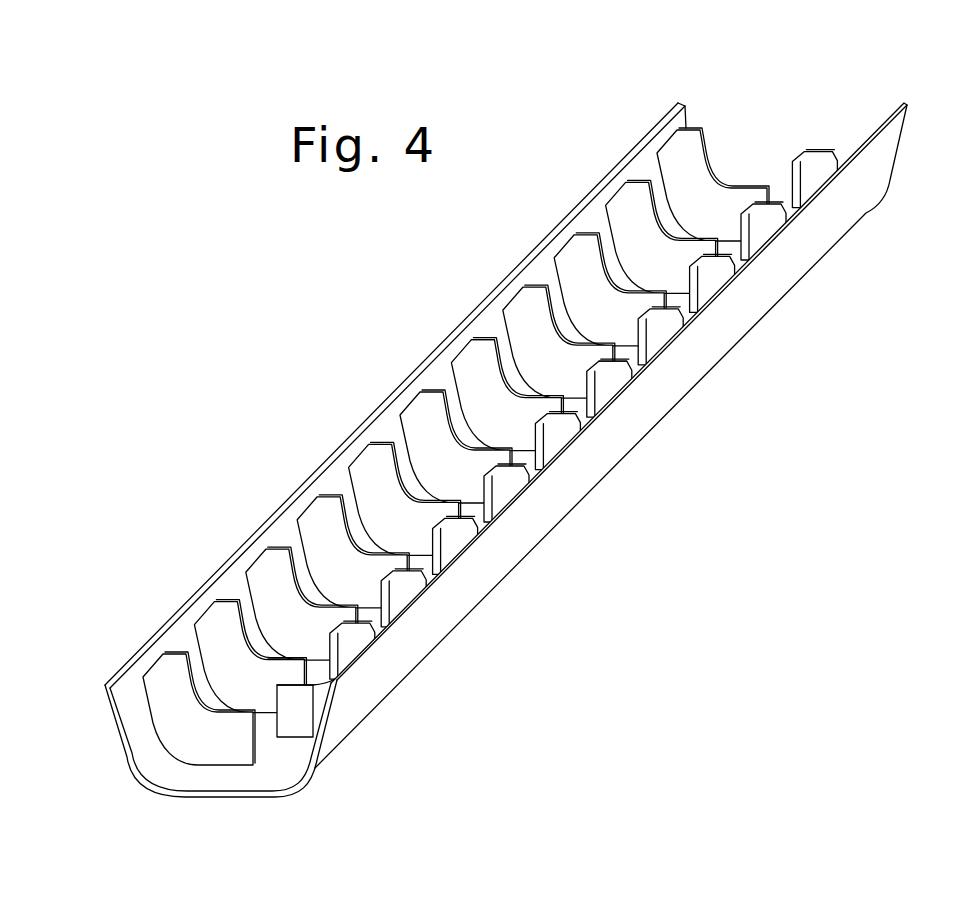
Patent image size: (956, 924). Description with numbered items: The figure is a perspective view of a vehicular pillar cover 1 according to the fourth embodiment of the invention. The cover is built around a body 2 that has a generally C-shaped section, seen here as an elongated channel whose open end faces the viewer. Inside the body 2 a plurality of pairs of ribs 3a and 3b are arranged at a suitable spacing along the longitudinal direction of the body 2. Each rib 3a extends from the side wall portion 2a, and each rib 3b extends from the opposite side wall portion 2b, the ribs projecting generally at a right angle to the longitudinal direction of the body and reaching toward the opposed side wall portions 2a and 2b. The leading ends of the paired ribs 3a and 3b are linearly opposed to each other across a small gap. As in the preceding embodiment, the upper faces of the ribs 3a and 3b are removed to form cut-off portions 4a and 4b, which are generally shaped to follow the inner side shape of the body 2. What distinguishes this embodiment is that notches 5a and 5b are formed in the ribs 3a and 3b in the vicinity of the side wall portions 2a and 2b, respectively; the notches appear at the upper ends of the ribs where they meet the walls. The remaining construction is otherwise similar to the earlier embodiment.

The vehicular pillar cover 1 is at (463, 407).
The body 2 is at (118, 777).
The side wall portion 2a is at (595, 443).
The side wall portion 2b is at (354, 436).
The rib 3a is at (814, 179).
The rib 3b is at (490, 446).
The cut-off portion 4a is at (318, 672).
The cut-off portion 4b is at (262, 647).
The notch 5a is at (636, 366).
The notch 5b is at (460, 343).